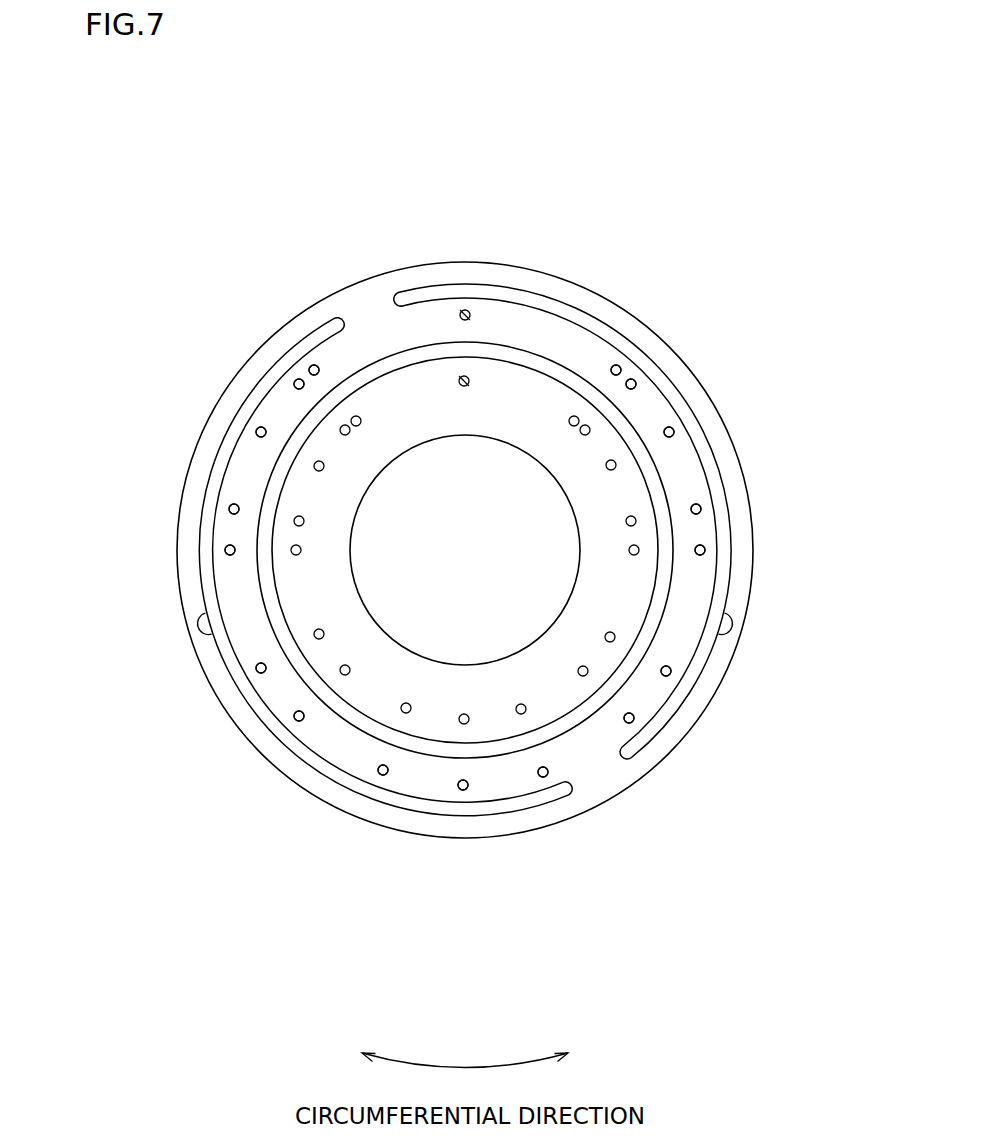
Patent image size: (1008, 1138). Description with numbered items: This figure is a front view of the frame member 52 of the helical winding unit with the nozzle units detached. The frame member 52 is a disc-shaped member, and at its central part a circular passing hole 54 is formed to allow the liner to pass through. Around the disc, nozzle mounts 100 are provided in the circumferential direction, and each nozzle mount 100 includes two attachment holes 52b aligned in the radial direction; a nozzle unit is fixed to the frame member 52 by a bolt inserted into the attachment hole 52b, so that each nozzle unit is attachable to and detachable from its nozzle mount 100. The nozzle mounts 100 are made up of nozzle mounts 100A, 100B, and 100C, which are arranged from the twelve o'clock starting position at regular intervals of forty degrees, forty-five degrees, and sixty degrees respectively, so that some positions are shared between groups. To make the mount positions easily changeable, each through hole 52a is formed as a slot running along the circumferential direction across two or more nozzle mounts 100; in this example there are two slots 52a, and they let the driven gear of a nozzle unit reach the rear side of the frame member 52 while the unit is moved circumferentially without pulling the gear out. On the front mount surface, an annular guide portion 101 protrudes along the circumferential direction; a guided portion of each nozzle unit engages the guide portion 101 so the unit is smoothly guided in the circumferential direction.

The frame member 52 is at (135, 212).
The through hole 52a is at (190, 627).
The attachment hole 52b is at (472, 320).
The passing hole 54 is at (482, 566).
The nozzle mount 100 is at (465, 305).
The nozzle mount 100A is at (308, 360).
The nozzle mount 100B is at (290, 377).
The nozzle mount 100C is at (251, 427).
The guide portion 101 is at (391, 356).